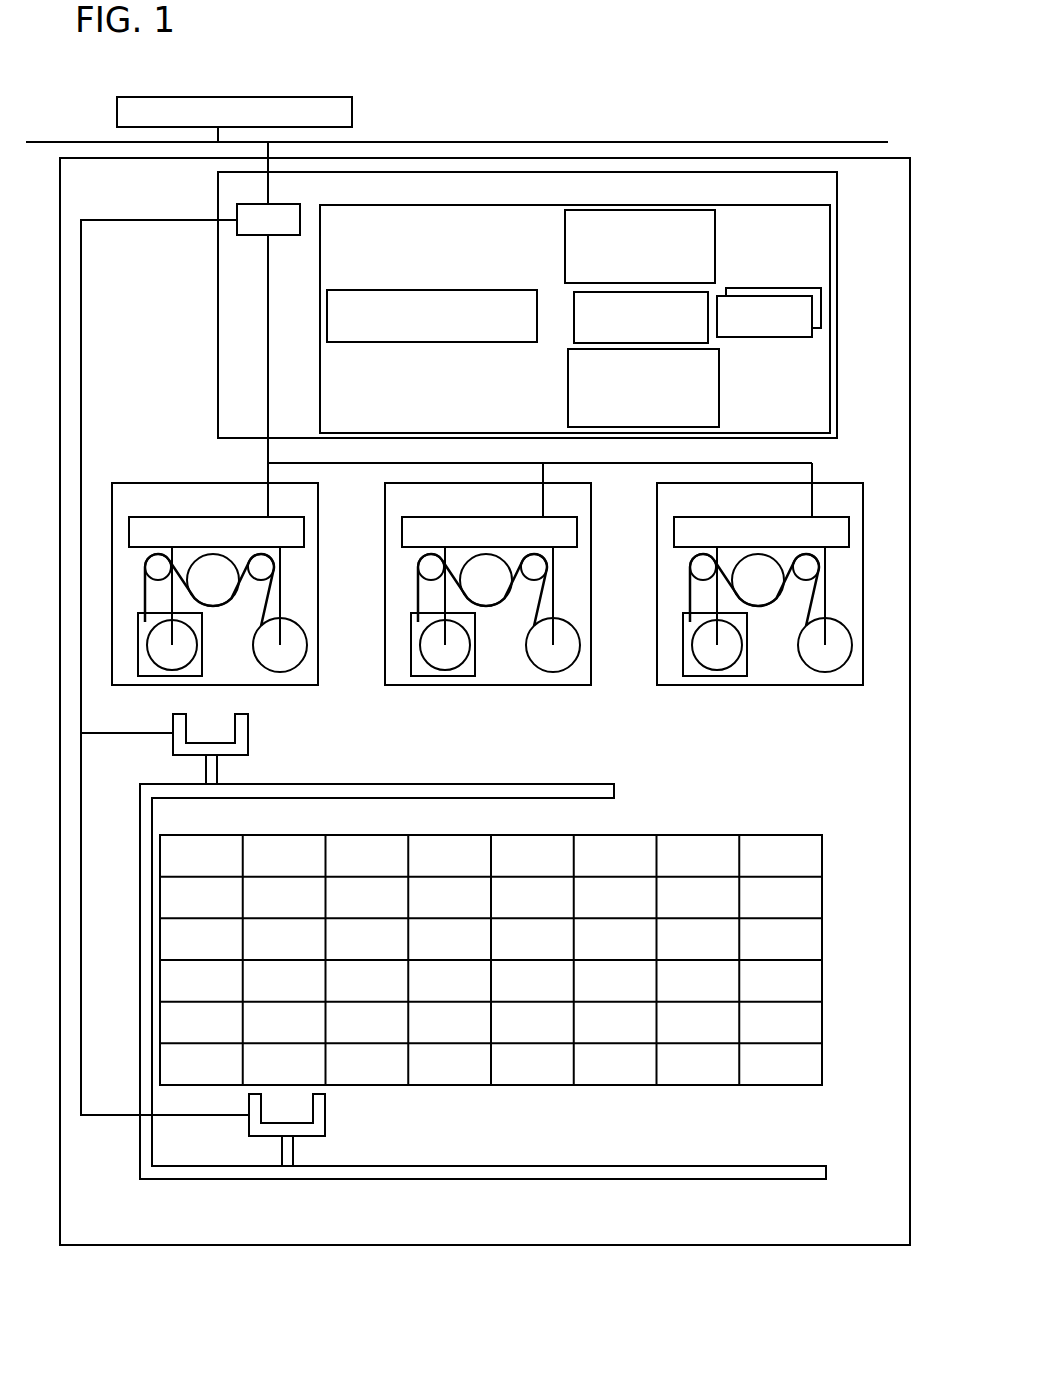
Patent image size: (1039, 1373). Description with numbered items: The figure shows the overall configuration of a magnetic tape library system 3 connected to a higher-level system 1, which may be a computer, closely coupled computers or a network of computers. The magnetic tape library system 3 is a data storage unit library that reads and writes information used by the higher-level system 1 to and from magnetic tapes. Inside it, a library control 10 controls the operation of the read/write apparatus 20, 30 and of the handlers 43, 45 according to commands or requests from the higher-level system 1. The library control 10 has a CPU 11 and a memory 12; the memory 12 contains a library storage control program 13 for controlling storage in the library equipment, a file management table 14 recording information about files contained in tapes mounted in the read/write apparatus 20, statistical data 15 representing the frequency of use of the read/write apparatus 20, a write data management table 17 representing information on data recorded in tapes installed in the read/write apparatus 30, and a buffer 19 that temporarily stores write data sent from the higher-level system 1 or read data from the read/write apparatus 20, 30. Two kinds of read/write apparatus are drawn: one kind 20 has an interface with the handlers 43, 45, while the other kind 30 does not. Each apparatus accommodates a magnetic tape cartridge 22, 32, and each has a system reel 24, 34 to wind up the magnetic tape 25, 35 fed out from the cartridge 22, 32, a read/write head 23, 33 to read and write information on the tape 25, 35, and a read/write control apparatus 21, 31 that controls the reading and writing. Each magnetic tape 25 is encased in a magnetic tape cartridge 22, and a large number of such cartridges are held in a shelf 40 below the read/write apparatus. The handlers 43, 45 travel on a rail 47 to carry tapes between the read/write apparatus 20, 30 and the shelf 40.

The higher-level system 1 is at (208, 114).
The magnetic tape library system 3 is at (485, 728).
The library control 10 is at (482, 305).
The CPU 11 is at (264, 255).
The memory 12 is at (554, 319).
The library storage control program 13 is at (432, 349).
The file management table 14 is at (602, 246).
The statistical data 15 is at (677, 342).
The write data management table 17 is at (608, 388).
The buffer 19 is at (769, 285).
The read/write apparatus 20 is at (351, 554).
The read/write control apparatus 21 is at (325, 519).
The magnetic tape cartridge 22 is at (246, 676).
The read/write head 23 is at (346, 639).
The system reel 24 is at (416, 678).
The magnetic tape 25 is at (231, 604).
The read/write apparatus 30 is at (737, 584).
The read/write control apparatus 31 is at (780, 482).
The magnetic tape cartridge 32 is at (715, 675).
The read/write head 33 is at (754, 637).
The system reel 34 is at (829, 674).
The magnetic tape 35 is at (663, 592).
The shelf 40 is at (491, 932).
The handler 43 is at (173, 749).
The handler 45 is at (329, 1130).
The rail 47 is at (483, 958).